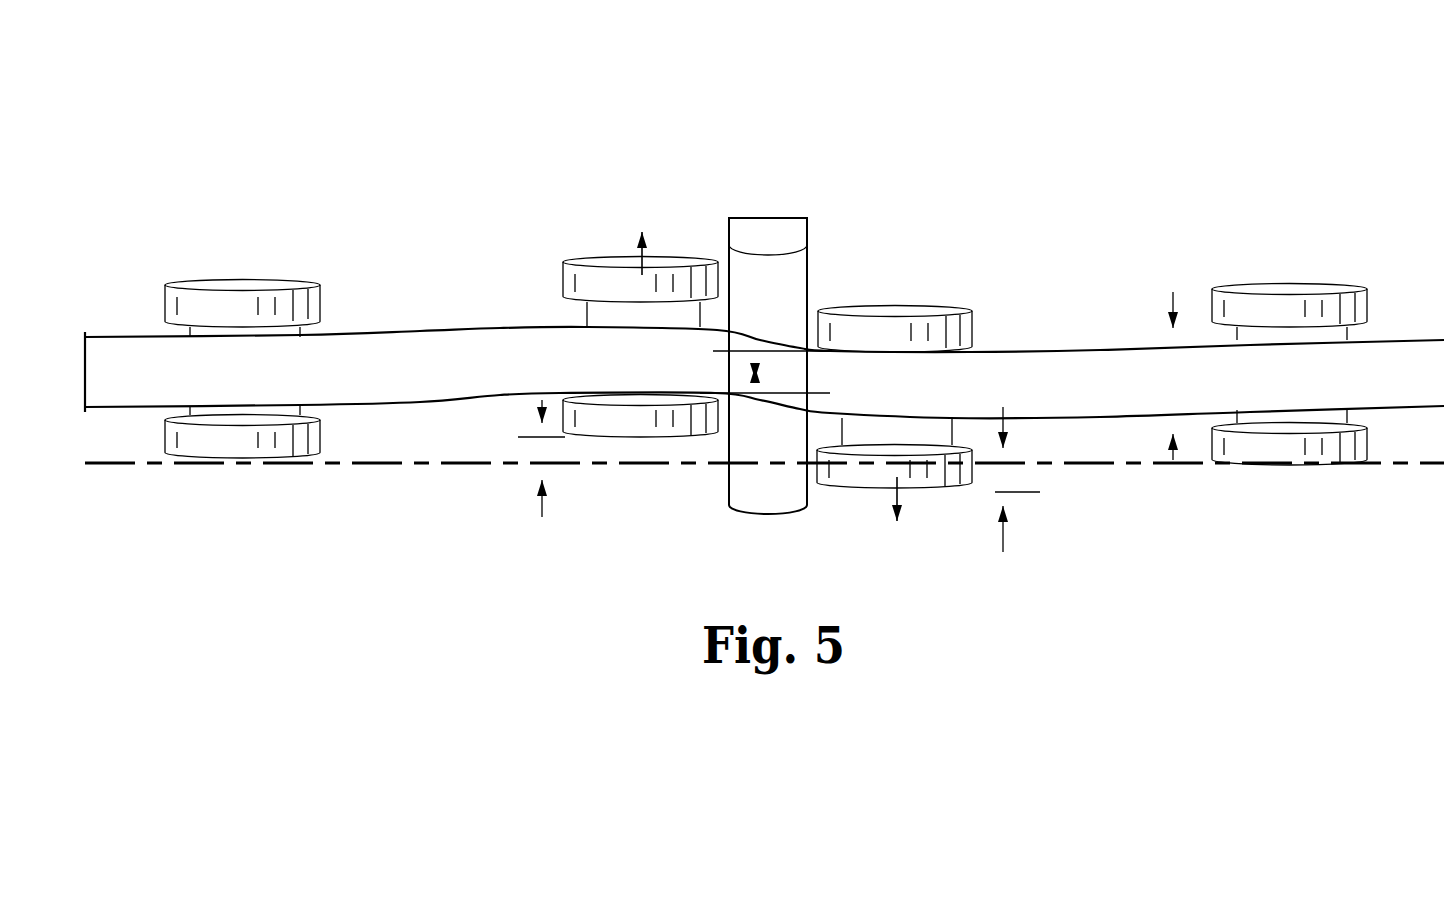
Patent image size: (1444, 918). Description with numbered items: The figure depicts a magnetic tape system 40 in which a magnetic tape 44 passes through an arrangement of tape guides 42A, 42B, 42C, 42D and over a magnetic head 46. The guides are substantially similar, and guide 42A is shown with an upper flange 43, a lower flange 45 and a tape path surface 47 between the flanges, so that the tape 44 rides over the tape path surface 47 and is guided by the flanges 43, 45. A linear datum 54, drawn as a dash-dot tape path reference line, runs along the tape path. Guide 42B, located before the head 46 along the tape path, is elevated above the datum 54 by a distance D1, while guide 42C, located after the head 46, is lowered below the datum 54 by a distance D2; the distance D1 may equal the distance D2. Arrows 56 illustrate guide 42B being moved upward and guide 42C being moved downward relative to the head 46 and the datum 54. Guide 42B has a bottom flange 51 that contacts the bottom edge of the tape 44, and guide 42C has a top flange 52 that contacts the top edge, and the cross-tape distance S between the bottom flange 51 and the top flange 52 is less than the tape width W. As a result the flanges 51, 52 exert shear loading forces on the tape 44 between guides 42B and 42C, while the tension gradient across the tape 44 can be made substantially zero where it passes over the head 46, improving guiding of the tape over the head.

The magnetic tape system 40 is at (903, 112).
The tape guide 42A is at (276, 384).
The tape guide 42B is at (640, 360).
The tape guide 42C is at (915, 341).
The tape guide 42D is at (1280, 278).
The upper flange 43 is at (203, 302).
The magnetic tape 44 is at (1117, 388).
The lower flange 45 is at (300, 440).
The magnetic head 46 is at (765, 250).
The tape path surface 47 is at (315, 410).
The bottom flange 51 is at (637, 425).
The top flange 52 is at (940, 330).
The linear datum 54 is at (145, 463).
The arrows 56 is at (650, 258).
The cross-tape distance S is at (765, 372).
The distance D1 is at (542, 517).
The distance D2 is at (1003, 535).
The width W is at (1173, 445).